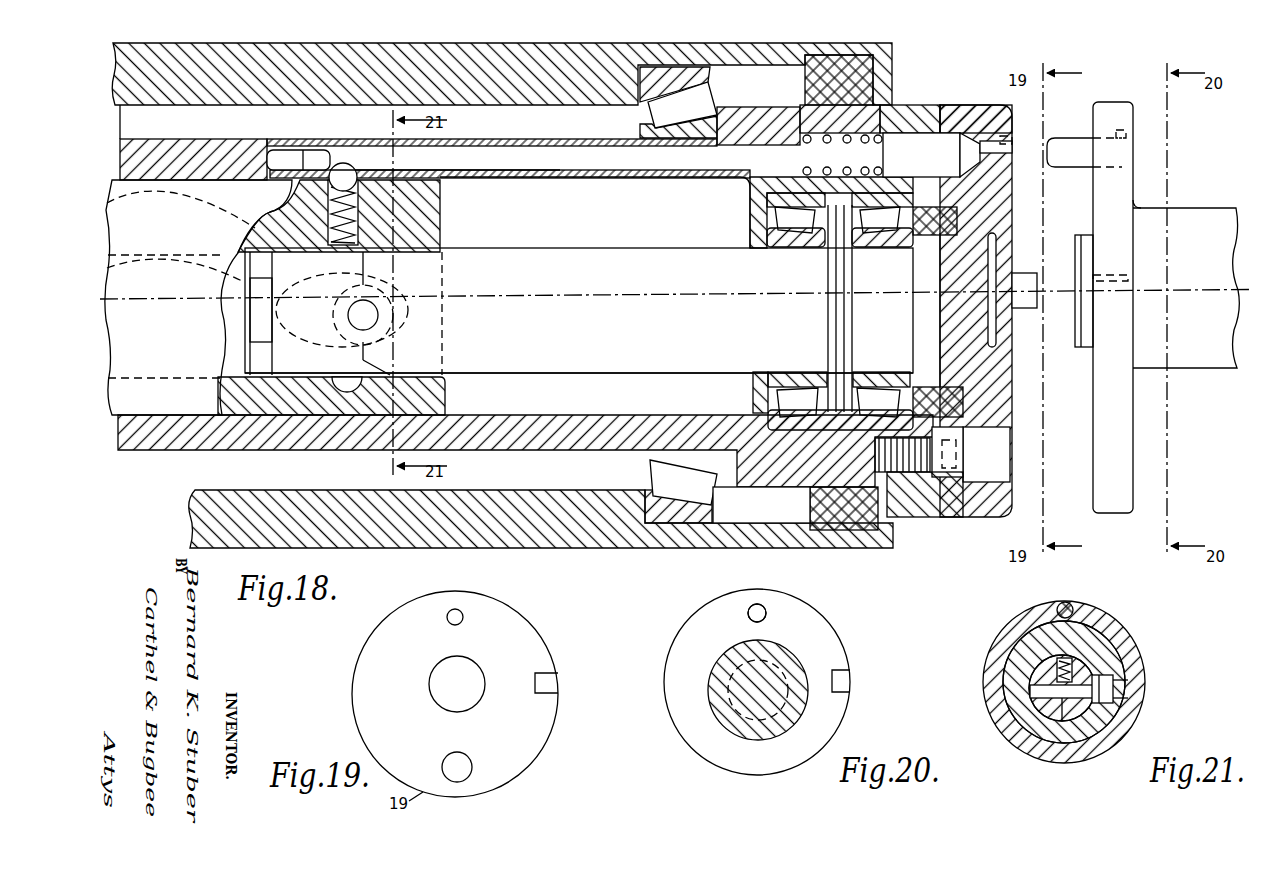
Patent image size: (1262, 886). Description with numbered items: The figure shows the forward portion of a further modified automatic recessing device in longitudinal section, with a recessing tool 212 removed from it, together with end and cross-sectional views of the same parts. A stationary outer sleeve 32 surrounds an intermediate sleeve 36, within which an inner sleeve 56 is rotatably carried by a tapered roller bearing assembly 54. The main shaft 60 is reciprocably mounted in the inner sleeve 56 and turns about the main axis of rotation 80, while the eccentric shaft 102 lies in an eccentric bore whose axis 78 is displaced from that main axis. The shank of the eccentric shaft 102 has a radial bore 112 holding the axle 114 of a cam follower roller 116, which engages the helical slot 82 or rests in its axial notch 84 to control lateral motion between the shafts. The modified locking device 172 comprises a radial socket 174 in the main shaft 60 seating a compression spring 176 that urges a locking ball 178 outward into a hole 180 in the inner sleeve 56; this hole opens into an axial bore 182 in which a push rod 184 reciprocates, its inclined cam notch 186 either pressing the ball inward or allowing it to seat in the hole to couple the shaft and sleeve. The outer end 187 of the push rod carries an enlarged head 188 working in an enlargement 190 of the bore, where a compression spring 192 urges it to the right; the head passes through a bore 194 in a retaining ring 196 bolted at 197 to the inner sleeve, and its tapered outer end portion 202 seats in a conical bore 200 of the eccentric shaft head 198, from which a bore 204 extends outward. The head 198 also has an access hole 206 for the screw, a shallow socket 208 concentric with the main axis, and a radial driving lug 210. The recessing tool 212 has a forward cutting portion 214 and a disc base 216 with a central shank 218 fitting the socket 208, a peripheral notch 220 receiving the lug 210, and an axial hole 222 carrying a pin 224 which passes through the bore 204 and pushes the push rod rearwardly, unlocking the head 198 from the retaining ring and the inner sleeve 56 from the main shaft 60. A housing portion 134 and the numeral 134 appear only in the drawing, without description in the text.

In FIG. 18, the outer sleeve 32 is at (118, 194).
In FIG. 18, the intermediate sleeve 36 is at (532, 106).
In FIG. 18, the tapered roller bearing assembly 54 is at (655, 119).
In FIG. 18, the inner sleeve 56 is at (202, 140).
In FIG. 21, the inner sleeve 56 is at (1002, 626).
In FIG. 18, the main shaft 60 is at (111, 178).
In FIG. 18, the axis of the eccentric bore 78 is at (758, 310).
In FIG. 18, the main axis of rotation 80 is at (193, 308).
In FIG. 18, the helical slot 82 is at (280, 333).
In FIG. 18, the axial notch 84 is at (380, 289).
In FIG. 21, the axial notch 84 is at (1128, 677).
In FIG. 18, the eccentric shaft 102 is at (657, 246).
In FIG. 21, the eccentric shaft 102 is at (1032, 648).
In FIG. 21, the radial bore 112 is at (1087, 737).
In FIG. 18, the axle 114 is at (378, 315).
In FIG. 21, the axle 114 is at (1040, 690).
In FIG. 18, the cam follower roller 116 is at (333, 321).
In FIG. 21, the cam follower roller 116 is at (1125, 683).
In FIG. 18, the housing 134 is at (582, 546).
In FIG. 18, the locking device 172 is at (486, 140).
In FIG. 21, the locking device 172 is at (1138, 637).
In FIG. 18, the radial socket 174 is at (300, 252).
In FIG. 18, the compression spring 176 is at (333, 247).
In FIG. 18, the locking ball 178 is at (357, 182).
In FIG. 18, the hole 180 is at (322, 170).
In FIG. 18, the axial bore 182 is at (517, 180).
In FIG. 21, the axial bore 182 is at (1073, 610).
In FIG. 18, the push rod 184 is at (597, 160).
In FIG. 21, the push rod 184 is at (1065, 603).
In FIG. 18, the cam notch 186 is at (343, 163).
In FIG. 18, the outer end of the push rod 187 is at (1010, 146).
In FIG. 18, the enlarged head 188 is at (921, 155).
In FIG. 18, the enlargement of the bore 190 is at (893, 130).
In FIG. 18, the compression spring 192 is at (805, 133).
In FIG. 18, the bore in the retaining ring 194 is at (950, 128).
In FIG. 18, the retaining ring 196 is at (952, 518).
In FIG. 18, the bolt 197 is at (940, 478).
In FIG. 18, the eccentric shaft head 198 is at (983, 510).
In FIG. 19, the eccentric shaft head 198 is at (510, 767).
In FIG. 18, the conical bore 200 is at (978, 107).
In FIG. 18, the tapered outer end portion 202 is at (968, 163).
In FIG. 18, the bore 204 is at (1013, 143).
In FIG. 19, the bore 204 is at (461, 619).
In FIG. 18, the access hole 206 is at (998, 482).
In FIG. 19, the access hole 206 is at (466, 760).
In FIG. 18, the shallow socket 208 is at (1000, 345).
In FIG. 19, the shallow socket 208 is at (478, 675).
In FIG. 18, the driving lug 210 is at (1028, 272).
In FIG. 19, the driving lug 210 is at (553, 694).
In FIG. 18, the recessing tool 212 is at (1143, 203).
In FIG. 18, the forward portion of the recessing tool 214 is at (1177, 222).
In FIG. 20, the forward portion of the recessing tool 214 is at (783, 651).
In FIG. 18, the base of the recessing tool 216 is at (1117, 105).
In FIG. 20, the base of the recessing tool 216 is at (700, 748).
In FIG. 18, the central short shank 218 is at (1085, 348).
In FIG. 20, the central short shank 218 is at (712, 668).
In FIG. 18, the radially-arranged notch 220 is at (1130, 278).
In FIG. 20, the radially-arranged notch 220 is at (853, 687).
In FIG. 18, the axial hole 222 is at (1128, 134).
In FIG. 20, the axial hole 222 is at (765, 612).
In FIG. 18, the pin 224 is at (1070, 146).
In FIG. 20, the pin 224 is at (755, 610).